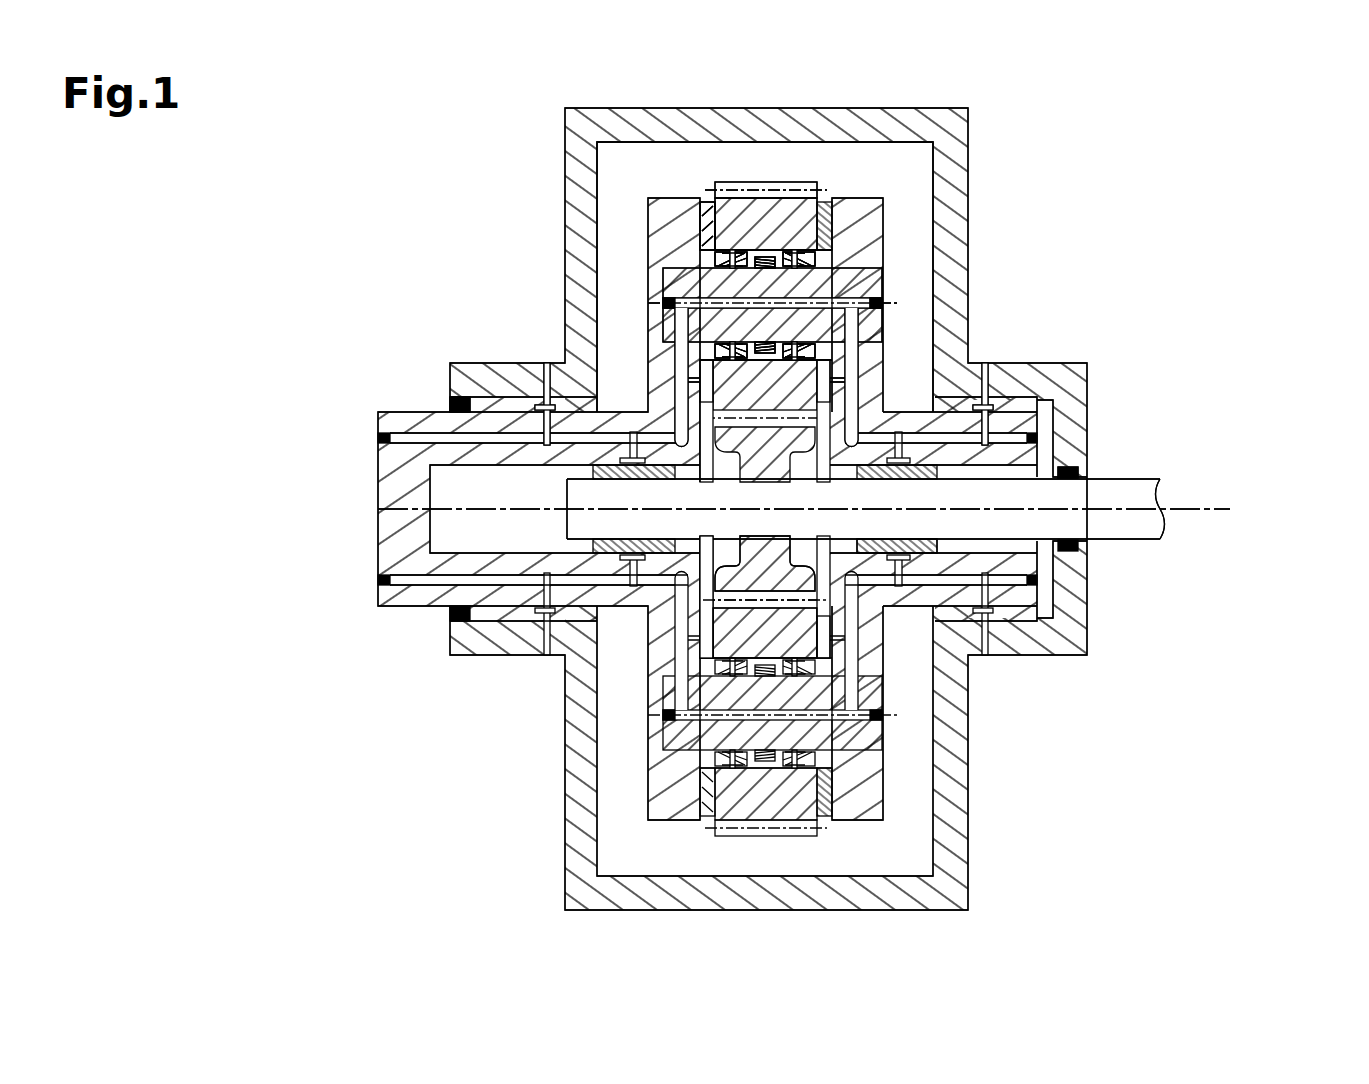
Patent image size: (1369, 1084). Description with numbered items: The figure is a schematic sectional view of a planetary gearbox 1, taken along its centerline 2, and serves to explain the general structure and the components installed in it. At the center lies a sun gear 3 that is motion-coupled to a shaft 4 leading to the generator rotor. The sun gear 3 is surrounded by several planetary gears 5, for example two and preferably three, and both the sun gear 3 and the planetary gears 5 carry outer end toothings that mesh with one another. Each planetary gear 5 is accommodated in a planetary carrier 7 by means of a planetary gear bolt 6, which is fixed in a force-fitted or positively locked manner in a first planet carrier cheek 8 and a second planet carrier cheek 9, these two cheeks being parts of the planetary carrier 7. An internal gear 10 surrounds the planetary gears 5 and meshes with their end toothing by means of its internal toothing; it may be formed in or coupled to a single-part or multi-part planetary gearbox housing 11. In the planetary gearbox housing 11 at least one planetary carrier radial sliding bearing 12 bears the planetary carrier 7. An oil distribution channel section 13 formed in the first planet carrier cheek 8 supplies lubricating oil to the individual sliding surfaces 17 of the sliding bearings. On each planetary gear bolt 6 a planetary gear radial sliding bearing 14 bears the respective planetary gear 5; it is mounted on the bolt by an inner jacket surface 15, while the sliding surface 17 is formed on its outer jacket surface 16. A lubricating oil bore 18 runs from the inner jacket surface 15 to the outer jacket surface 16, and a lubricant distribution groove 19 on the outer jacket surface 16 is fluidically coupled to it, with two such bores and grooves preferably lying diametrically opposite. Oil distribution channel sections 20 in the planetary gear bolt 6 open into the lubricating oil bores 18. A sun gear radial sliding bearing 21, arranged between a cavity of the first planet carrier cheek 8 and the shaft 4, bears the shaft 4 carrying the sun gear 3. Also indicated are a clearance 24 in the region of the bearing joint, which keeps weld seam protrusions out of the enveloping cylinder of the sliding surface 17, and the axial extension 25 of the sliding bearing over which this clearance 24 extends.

The planetary gearbox 1 is at (1242, 141).
The centerline 2 is at (1213, 510).
The sun gear 3 is at (783, 550).
The shaft 4 is at (1128, 528).
The planetary gears 5 is at (773, 220).
The planetary gear bolt 6 is at (857, 287).
The planetary carrier 7 is at (899, 182).
The first planet carrier cheek 8 is at (665, 207).
The second planet carrier cheek 9 is at (871, 215).
The internal gear 10 is at (782, 163).
The planetary gearbox housing 11 is at (573, 853).
The planetary carrier radial sliding bearing 12 is at (517, 397).
The oil distribution channel section 13 is at (852, 362).
The planetary gear radial sliding bearing 14 is at (757, 240).
The inner jacket surface 15 is at (753, 270).
The outer jacket surface 16 is at (715, 247).
The sliding surface 17 is at (707, 226).
The lubricating oil bore 18 is at (717, 343).
The lubricant distribution groove 19 is at (712, 348).
The oil distribution channel sections 20 is at (828, 300).
The sun gear radial sliding bearing 21 is at (927, 548).
The clearance 24 is at (720, 642).
The axial extension 25 is at (807, 622).